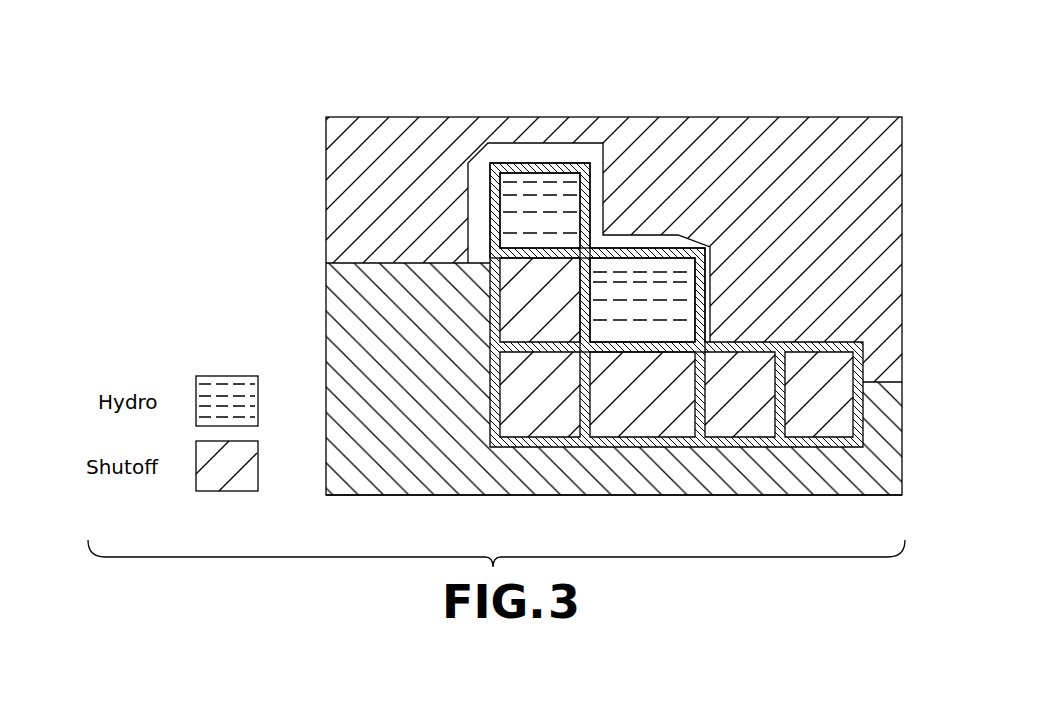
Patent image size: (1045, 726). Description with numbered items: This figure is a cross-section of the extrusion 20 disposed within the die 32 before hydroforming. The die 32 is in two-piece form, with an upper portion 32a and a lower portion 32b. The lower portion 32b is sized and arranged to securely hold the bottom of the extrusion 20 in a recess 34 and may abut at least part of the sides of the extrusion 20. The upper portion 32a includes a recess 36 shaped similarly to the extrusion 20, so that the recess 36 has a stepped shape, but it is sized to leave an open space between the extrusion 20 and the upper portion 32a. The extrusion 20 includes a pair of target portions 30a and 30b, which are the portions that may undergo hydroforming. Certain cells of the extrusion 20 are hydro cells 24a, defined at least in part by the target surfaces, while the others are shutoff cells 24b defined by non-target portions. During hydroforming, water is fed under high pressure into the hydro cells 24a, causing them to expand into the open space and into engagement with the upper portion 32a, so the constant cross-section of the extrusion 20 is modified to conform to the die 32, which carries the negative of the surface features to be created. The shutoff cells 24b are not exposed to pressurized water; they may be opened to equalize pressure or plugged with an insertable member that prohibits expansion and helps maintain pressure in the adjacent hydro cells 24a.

The extrusion 20 is at (738, 470).
The hydro cells 24a is at (515, 228).
The shutoff cells 24b is at (657, 405).
The target portion 30a is at (548, 163).
The target portion 30b is at (645, 247).
The die 32 is at (297, 92).
The upper portion 32a is at (405, 117).
The lower portion 32b is at (460, 495).
The recess 34 is at (863, 427).
The recess 36 is at (475, 197).